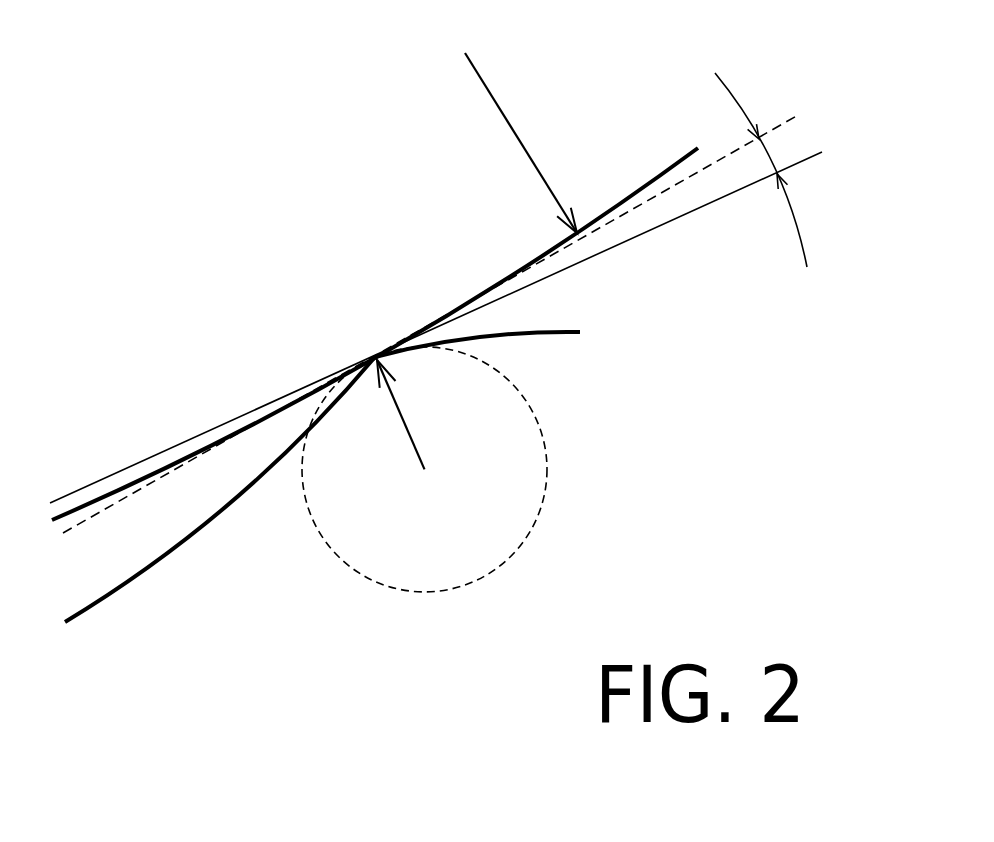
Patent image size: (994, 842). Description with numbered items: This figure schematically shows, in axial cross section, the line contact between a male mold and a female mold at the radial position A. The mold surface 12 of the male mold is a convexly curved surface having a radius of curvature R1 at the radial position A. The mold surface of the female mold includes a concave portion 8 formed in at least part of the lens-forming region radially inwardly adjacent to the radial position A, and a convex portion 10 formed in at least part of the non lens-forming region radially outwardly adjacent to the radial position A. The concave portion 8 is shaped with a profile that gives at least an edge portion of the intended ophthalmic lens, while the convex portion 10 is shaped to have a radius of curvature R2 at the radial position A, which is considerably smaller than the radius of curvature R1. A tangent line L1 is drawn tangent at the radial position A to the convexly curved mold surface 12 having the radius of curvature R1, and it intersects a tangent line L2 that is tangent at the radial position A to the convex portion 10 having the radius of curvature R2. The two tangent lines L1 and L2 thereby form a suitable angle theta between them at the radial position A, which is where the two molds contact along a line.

The concave portion 8 is at (210, 520).
The convex portion 10 is at (543, 332).
The mold surface 12 is at (153, 477).
The tangent line L1 is at (780, 122).
The tangent line L2 is at (807, 160).
The radius of curvature R1 is at (521, 143).
The radius of curvature R2 is at (424, 469).
The radial position A is at (375, 351).
The angle theta is at (761, 170).